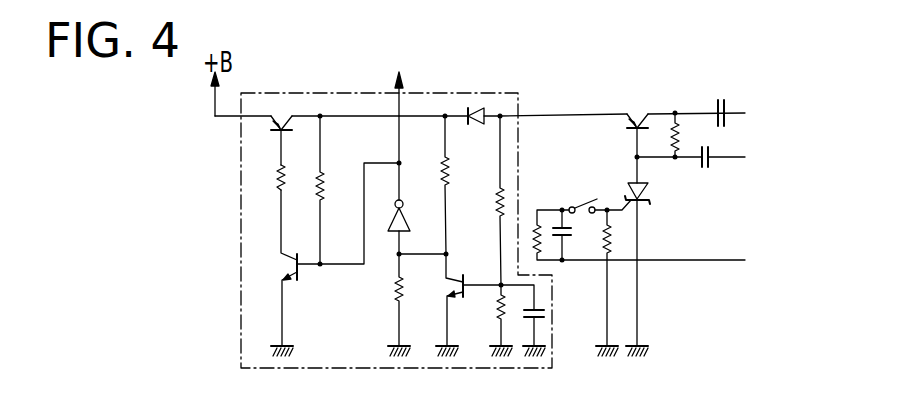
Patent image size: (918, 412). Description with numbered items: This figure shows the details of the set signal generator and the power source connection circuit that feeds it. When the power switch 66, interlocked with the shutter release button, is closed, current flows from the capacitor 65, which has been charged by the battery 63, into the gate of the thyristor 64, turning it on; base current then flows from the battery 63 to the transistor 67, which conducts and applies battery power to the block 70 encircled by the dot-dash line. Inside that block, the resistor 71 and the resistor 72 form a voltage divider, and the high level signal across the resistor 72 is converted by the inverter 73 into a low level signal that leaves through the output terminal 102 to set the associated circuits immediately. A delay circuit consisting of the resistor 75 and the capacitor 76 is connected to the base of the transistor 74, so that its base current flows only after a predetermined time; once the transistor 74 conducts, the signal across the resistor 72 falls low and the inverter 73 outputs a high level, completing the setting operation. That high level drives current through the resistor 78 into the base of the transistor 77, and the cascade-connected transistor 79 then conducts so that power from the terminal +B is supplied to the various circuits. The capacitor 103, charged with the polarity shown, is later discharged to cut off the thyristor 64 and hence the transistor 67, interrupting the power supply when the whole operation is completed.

The battery 63 is at (721, 98).
The thyristor 64 is at (634, 186).
The capacitor 65 is at (574, 232).
The power switch 66 is at (573, 206).
The transistor 67 is at (638, 124).
The block 70 is at (480, 93).
The resistor 71 is at (449, 170).
The resistor 72 is at (396, 286).
The inverter 73 is at (414, 188).
The transistor 74 is at (447, 298).
The resistor 75 is at (498, 208).
The capacitor 76 is at (546, 313).
The transistor 77 is at (292, 264).
The resistor 78 is at (324, 196).
The transistor 79 is at (283, 126).
The output terminal 102 is at (399, 77).
The capacitor 103 is at (706, 169).